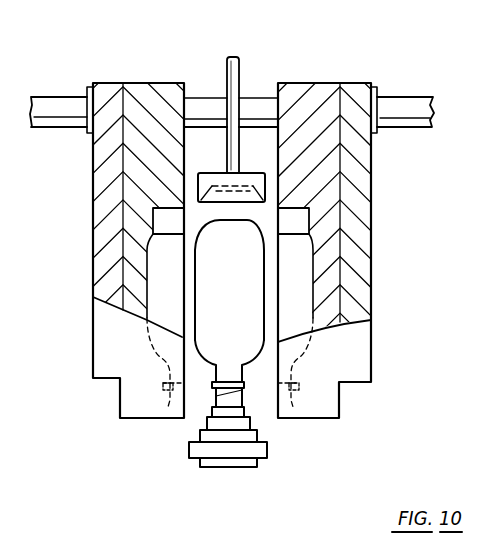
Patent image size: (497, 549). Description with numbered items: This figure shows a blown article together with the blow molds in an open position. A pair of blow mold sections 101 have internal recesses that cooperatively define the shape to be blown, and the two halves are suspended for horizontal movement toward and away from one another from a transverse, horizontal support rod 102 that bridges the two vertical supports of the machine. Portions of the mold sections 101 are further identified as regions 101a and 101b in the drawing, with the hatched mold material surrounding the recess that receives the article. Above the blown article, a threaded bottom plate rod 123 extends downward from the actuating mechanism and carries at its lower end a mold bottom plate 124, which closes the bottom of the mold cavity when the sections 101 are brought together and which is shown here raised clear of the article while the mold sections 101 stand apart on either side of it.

The blow mold sections 101 is at (103, 238).
The mold insert portion 101a is at (307, 273).
The neck groove of mold 101b is at (307, 218).
The support rod 102 is at (425, 103).
The bottom plate rod 123 is at (227, 62).
The mold bottom plate 124 is at (215, 173).